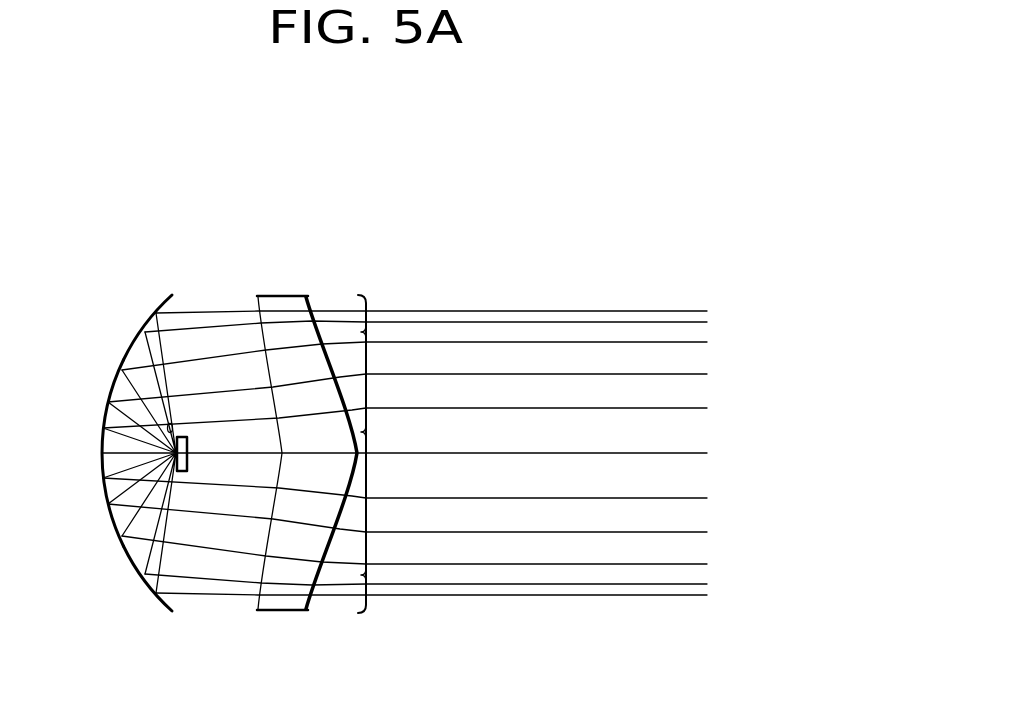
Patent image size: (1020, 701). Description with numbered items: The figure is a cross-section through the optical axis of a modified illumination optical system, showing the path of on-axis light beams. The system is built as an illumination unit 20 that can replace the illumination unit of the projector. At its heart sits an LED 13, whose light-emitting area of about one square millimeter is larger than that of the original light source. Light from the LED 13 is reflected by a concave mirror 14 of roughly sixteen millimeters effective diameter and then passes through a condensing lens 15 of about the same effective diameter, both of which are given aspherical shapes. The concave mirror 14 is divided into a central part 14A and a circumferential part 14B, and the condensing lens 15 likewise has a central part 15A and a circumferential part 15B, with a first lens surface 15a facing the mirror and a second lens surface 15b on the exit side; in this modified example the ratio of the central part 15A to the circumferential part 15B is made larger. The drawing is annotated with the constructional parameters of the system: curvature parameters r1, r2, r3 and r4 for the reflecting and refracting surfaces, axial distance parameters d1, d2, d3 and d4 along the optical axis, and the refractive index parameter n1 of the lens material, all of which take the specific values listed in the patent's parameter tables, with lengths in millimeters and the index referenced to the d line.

The illumination unit 20 is at (334, 224).
The LED 13 is at (188, 447).
The concave mirror 14 is at (165, 305).
The central part 14A is at (82, 375).
The circumferential part 14B is at (82, 302).
The condensing lens 15 is at (280, 293).
The first lens surface 15a is at (250, 312).
The second lens surface 15b is at (320, 333).
The central part 15A is at (368, 432).
The circumferential part 15B is at (367, 332).
The radius of curvature parameter r1 is at (172, 426).
The radius of curvature parameter r2 is at (175, 603).
The radius of curvature parameter r3 is at (252, 592).
The radius of curvature parameter r4 is at (324, 600).
The refractive index parameter n1 is at (282, 613).
The distance parameter d1 is at (160, 482).
The distance parameter d2 is at (232, 456).
The distance parameter d3 is at (338, 460).
The distance parameter d4 is at (438, 456).